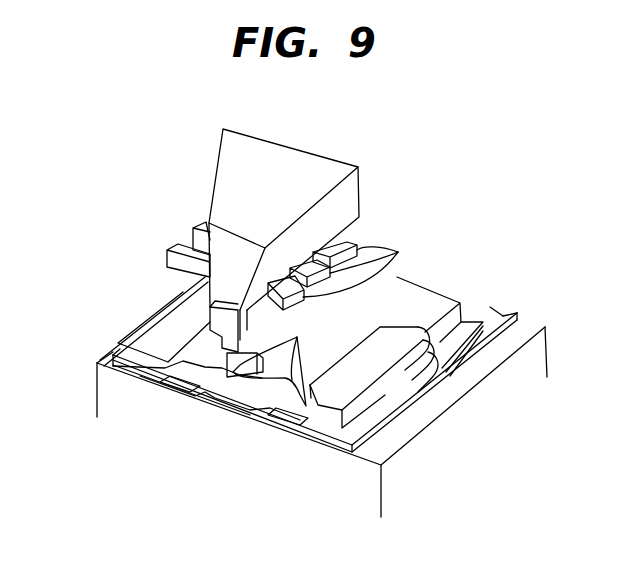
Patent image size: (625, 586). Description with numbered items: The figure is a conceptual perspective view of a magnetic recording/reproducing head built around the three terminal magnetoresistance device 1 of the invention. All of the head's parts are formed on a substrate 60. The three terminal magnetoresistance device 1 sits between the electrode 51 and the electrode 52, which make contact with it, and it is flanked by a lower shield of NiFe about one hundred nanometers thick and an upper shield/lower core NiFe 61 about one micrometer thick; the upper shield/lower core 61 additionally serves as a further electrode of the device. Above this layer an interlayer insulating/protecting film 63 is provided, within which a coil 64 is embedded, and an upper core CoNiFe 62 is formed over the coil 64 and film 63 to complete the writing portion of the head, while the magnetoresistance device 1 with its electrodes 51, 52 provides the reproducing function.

The three terminal magnetoresistance device 1 is at (213, 405).
The electrode 51 is at (497, 312).
The electrode 52 is at (170, 387).
The substrate 60 is at (113, 400).
The upper shield/lower core NiFe 61 is at (137, 345).
The upper core CoNiFe 62 is at (170, 300).
The interlayer insulating/protecting film 63 is at (279, 366).
The coil 64 is at (399, 252).